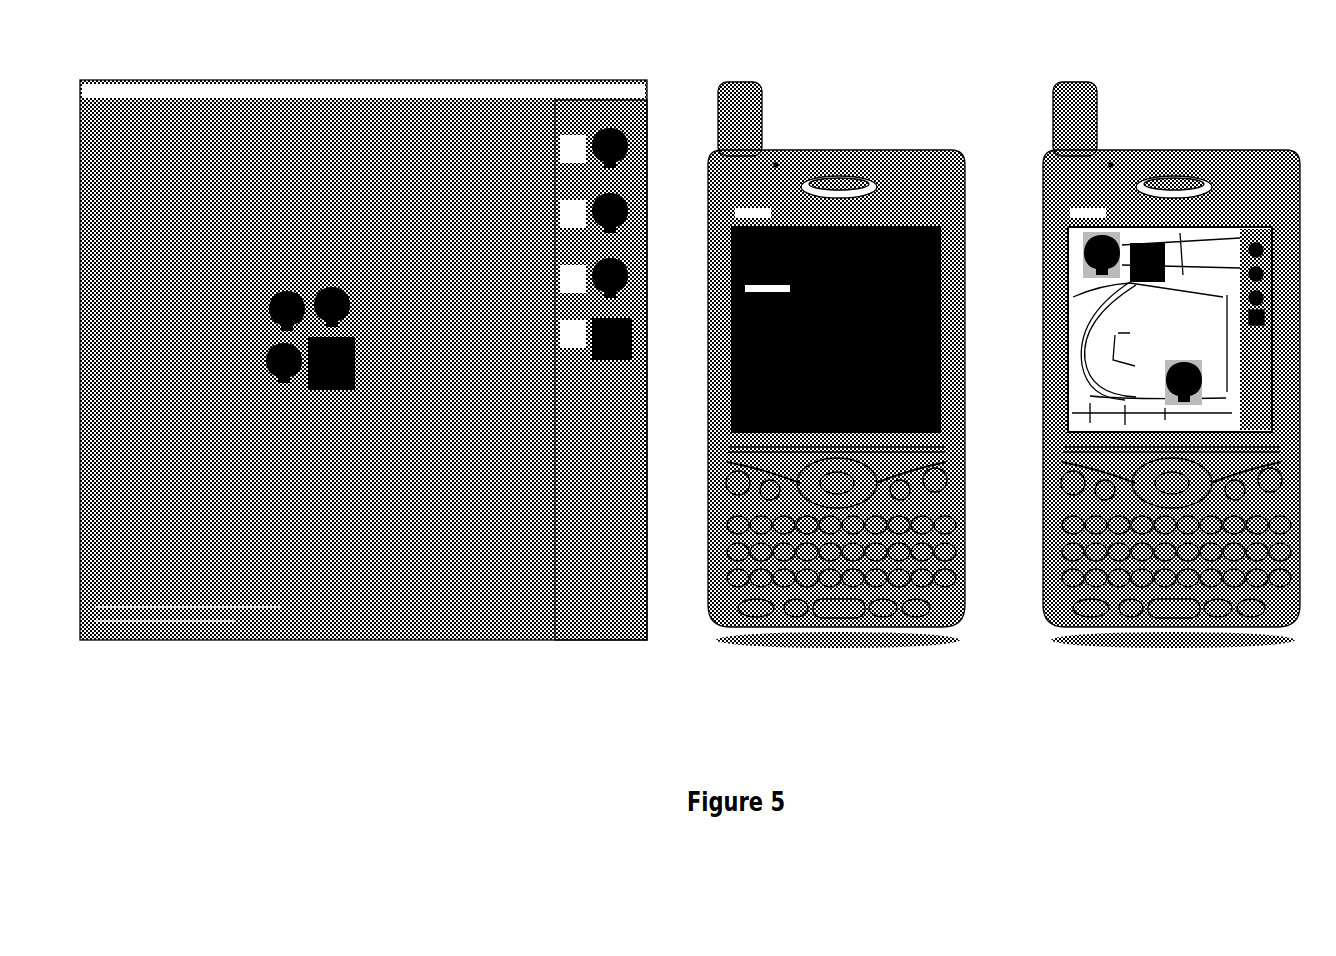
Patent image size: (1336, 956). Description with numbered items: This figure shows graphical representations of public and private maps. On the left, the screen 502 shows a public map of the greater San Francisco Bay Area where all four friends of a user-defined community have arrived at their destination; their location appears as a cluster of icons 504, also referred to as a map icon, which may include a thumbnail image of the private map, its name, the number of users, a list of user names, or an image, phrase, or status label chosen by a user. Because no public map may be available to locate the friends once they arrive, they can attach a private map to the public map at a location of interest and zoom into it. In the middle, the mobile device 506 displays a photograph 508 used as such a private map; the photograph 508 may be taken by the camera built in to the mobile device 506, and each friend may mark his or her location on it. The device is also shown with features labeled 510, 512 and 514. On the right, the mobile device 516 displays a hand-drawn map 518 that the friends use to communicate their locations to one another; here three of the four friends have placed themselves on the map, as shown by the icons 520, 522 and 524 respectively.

The screen 502 is at (363, 330).
The cluster of icons 504 is at (355, 288).
The mobile device 506 is at (818, 357).
The photograph 508 is at (804, 268).
The speaker 510 is at (840, 188).
The contact marker on map 512 is at (742, 345).
The map display area 514 is at (740, 250).
The mobile device 516 is at (1151, 355).
The hand-drawn map 518 is at (1190, 255).
The icon 520 is at (1085, 253).
The icon 522 is at (1130, 278).
The icon 524 is at (1165, 380).